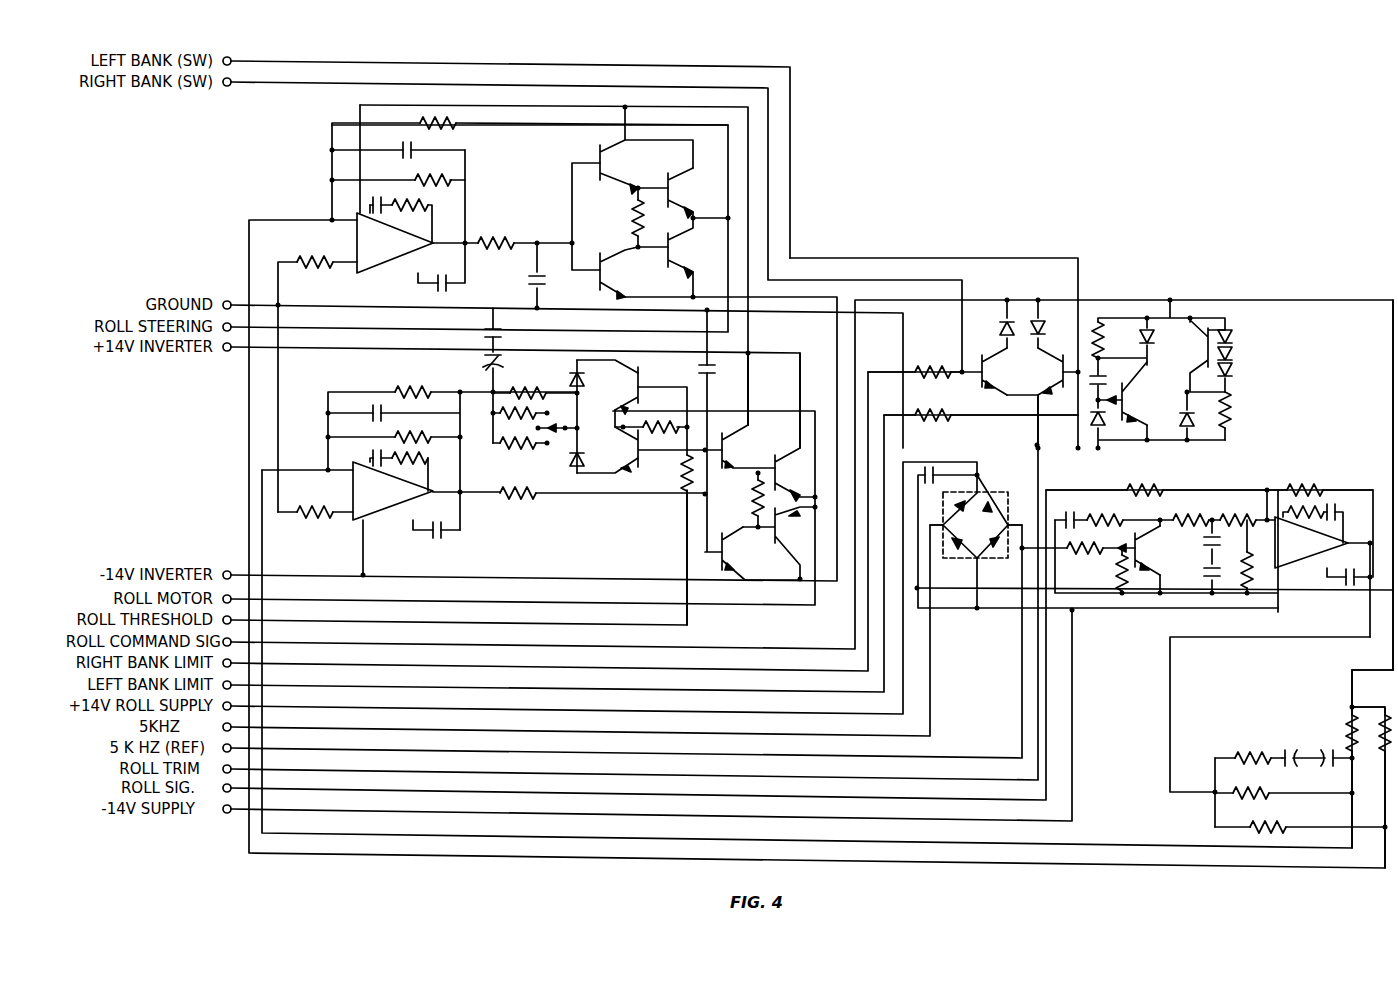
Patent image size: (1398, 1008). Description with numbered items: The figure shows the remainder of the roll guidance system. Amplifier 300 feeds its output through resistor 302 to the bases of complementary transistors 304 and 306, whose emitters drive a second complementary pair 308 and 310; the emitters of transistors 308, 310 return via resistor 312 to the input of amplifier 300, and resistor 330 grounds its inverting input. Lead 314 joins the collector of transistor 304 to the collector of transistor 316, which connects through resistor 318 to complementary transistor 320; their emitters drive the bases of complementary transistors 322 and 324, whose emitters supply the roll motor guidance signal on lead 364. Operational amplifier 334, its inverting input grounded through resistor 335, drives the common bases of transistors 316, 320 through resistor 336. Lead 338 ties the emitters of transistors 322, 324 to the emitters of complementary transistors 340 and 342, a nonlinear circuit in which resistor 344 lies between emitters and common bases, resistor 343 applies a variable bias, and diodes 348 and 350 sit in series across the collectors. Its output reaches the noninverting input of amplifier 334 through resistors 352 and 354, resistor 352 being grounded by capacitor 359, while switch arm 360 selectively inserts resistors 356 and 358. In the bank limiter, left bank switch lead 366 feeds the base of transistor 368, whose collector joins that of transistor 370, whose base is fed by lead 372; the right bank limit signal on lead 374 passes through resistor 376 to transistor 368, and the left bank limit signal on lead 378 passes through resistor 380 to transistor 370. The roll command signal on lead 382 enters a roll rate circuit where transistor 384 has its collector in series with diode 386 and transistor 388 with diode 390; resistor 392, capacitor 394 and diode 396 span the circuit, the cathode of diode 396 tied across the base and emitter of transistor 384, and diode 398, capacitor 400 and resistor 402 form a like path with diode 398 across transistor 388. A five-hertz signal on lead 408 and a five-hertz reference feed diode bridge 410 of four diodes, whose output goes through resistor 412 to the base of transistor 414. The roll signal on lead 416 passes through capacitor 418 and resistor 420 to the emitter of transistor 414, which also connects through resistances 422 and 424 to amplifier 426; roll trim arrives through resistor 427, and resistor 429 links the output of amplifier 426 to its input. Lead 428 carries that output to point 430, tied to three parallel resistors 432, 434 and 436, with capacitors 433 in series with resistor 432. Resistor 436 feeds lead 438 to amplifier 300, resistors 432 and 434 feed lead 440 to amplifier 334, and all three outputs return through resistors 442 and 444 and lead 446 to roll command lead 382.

The amplifier 300 is at (395, 189).
The resistor 302 is at (495, 240).
The transistor 304 is at (616, 158).
The transistor 306 is at (616, 280).
The transistor 308 is at (688, 187).
The transistor 310 is at (688, 247).
The resistor 312 is at (455, 126).
The lead 314 is at (760, 229).
The transistor 316 is at (736, 443).
The resistor 318 is at (755, 498).
The transistor 320 is at (735, 562).
The transistor 322 is at (810, 430).
The transistor 324 is at (813, 585).
The resistor 330 is at (314, 258).
The operational amplifier 334 is at (393, 518).
The resistor 335 is at (305, 522).
The resistor 336 is at (446, 538).
The lead 338 is at (752, 410).
The transistor 340 is at (628, 385).
The transistor 342 is at (628, 455).
The resistor 343 is at (680, 470).
The resistor 344 is at (642, 410).
The diode 348 is at (572, 362).
The diode 350 is at (573, 478).
The resistor 352 is at (512, 388).
The resistor 354 is at (400, 390).
The resistor 356 is at (498, 410).
The resistor 358 is at (520, 448).
The capacitor 359 is at (480, 355).
The switch arm 360 is at (565, 478).
The lead 364 is at (728, 612).
The left bank switch signal lead 366 is at (768, 113).
The transistor 368 is at (990, 368).
The transistor 370 is at (1048, 380).
The lead 372 is at (1003, 258).
The lead 374 is at (712, 672).
The resistor 376 is at (912, 368).
The lead 378 is at (652, 692).
The resistor 380 is at (918, 412).
The roll command signal lead 382 is at (600, 645).
The transistor 384 is at (1137, 404).
The diode 386 is at (1152, 318).
The transistor 388 is at (1232, 353).
The diode 390 is at (1200, 432).
The resistor 392 is at (1092, 318).
The capacitor 394 is at (1092, 393).
The diode 396 is at (1098, 442).
The diode 398 is at (1228, 326).
The capacitor 400 is at (1233, 372).
The resistor 402 is at (1232, 410).
The lead 408 is at (597, 733).
The diode bridge 410 is at (1010, 505).
The resistor 412 is at (1075, 556).
The transistor 414 is at (1145, 550).
The lead 416 is at (715, 790).
The capacitor 418 is at (1068, 512).
The resistor 420 is at (1108, 518).
The resistance 422 is at (1178, 518).
The resistance 424 is at (1222, 530).
The amplifier 426 is at (1322, 570).
The resistor 427 is at (1147, 486).
The lead 428 is at (1285, 640).
The resistor 429 is at (1325, 488).
The point 430 is at (1212, 790).
The resistor 432 is at (1258, 752).
The capacitors 433 is at (1328, 745).
The resistor 434 is at (1260, 790).
The resistor 436 is at (1260, 820).
The lead 438 is at (1078, 865).
The lead 440 is at (1165, 842).
The resistor 442 is at (1345, 715).
The resistor 444 is at (1385, 705).
The lead 446 is at (1393, 430).